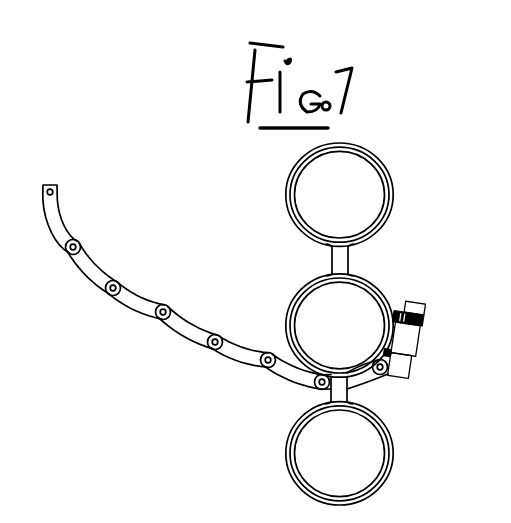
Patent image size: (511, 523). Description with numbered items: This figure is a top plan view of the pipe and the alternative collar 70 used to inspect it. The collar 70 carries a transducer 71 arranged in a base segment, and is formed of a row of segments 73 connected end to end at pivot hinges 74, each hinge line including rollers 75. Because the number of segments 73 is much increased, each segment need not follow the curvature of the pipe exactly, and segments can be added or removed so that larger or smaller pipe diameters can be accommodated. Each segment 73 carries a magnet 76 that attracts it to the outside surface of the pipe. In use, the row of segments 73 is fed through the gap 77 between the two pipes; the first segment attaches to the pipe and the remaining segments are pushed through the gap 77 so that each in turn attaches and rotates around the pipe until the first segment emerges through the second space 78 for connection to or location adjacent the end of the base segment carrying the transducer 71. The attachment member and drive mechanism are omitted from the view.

The collar 70 is at (215, 309).
The transducer 71 is at (414, 333).
The segments 73 is at (140, 320).
The pivot hinges 74 is at (216, 350).
The rollers 75 is at (86, 243).
The magnet 76 is at (63, 227).
The gap 77 is at (355, 394).
The second space 78 is at (366, 263).